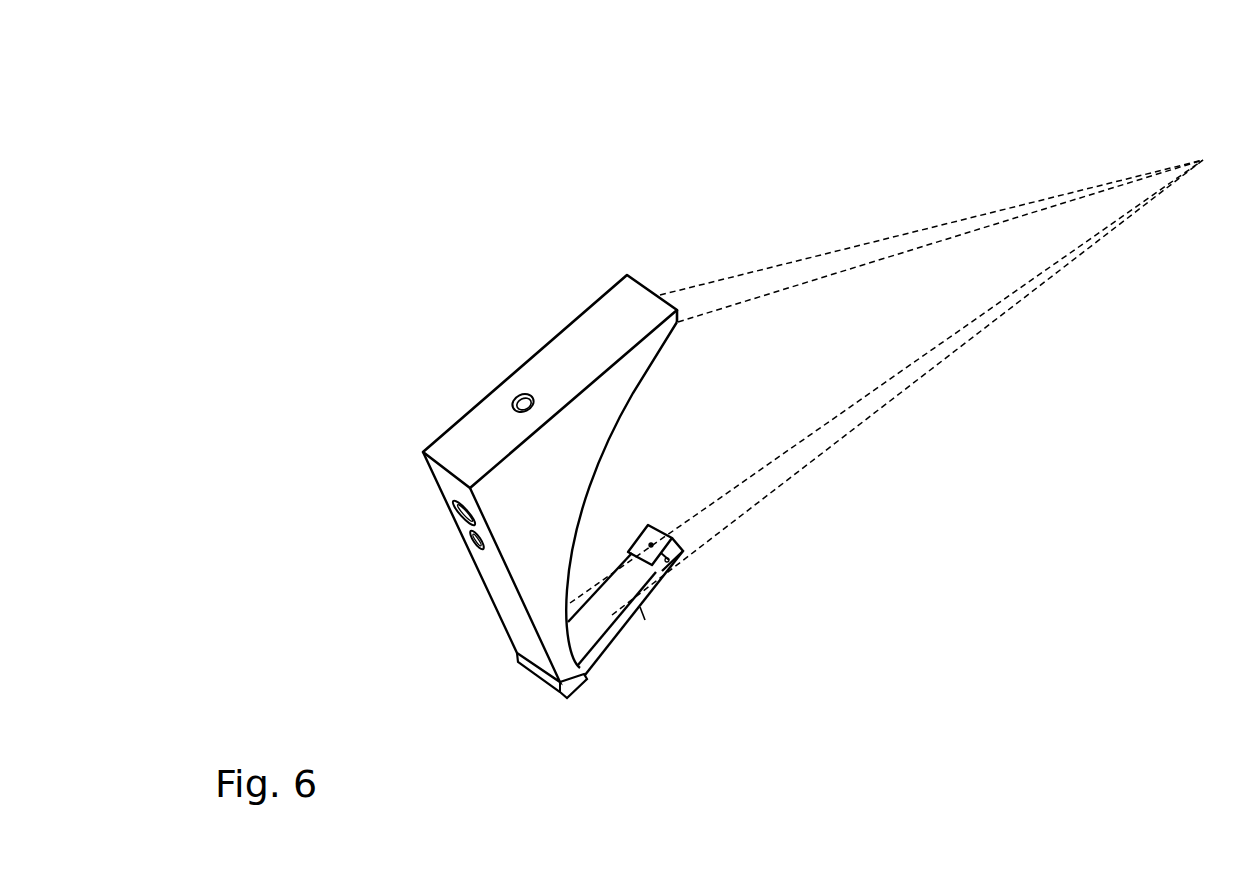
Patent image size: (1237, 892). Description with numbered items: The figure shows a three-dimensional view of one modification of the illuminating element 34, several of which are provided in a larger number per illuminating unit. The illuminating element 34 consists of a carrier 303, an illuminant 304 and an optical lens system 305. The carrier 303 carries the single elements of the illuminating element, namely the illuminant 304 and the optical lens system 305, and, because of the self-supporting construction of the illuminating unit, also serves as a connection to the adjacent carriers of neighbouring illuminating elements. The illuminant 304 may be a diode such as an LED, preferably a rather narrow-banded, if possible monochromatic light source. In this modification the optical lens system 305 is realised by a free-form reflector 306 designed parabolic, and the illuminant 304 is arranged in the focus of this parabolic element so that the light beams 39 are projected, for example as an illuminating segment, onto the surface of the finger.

The illuminating element 34 is at (760, 384).
The carrier 303 is at (530, 583).
The illuminant 304 is at (657, 543).
The optical lens system 305 is at (630, 455).
The free-form reflector 306 is at (633, 393).
The light beams 39 is at (1067, 227).